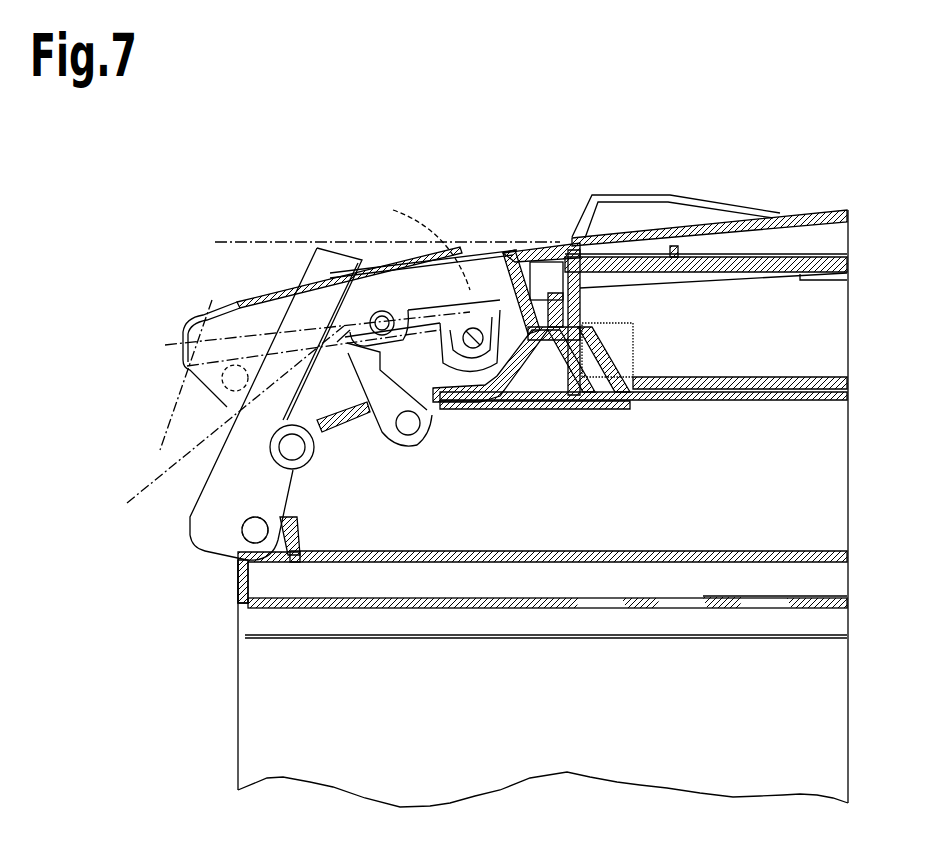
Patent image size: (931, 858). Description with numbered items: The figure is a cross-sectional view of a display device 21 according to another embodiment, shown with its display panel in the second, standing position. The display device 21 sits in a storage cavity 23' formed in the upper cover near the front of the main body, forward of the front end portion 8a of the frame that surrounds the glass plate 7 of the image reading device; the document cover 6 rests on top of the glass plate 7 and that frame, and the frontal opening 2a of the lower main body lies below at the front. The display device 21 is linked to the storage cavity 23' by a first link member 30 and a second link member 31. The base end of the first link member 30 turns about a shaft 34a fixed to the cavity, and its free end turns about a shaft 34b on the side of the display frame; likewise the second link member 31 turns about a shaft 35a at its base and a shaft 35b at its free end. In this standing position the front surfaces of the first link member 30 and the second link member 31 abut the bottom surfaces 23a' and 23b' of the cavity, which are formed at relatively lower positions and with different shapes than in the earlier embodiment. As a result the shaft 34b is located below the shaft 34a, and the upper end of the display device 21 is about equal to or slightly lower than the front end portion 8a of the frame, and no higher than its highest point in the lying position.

The frontal opening 2a is at (240, 623).
The document cover 6 is at (785, 212).
The glass plate 7 is at (850, 256).
The front end portion of the frame 8a is at (518, 258).
The display device 21 is at (225, 417).
The storage cavity 23' is at (423, 275).
The bottom surface of the storage cavity 23a' is at (542, 560).
The bottom surface of the storage cavity 23b' is at (488, 433).
The first link member 30 is at (263, 477).
The second link member 31 is at (378, 397).
The shaft 34a is at (297, 457).
The shaft 34b is at (232, 365).
The shaft 35a is at (420, 423).
The shaft 35b is at (382, 311).